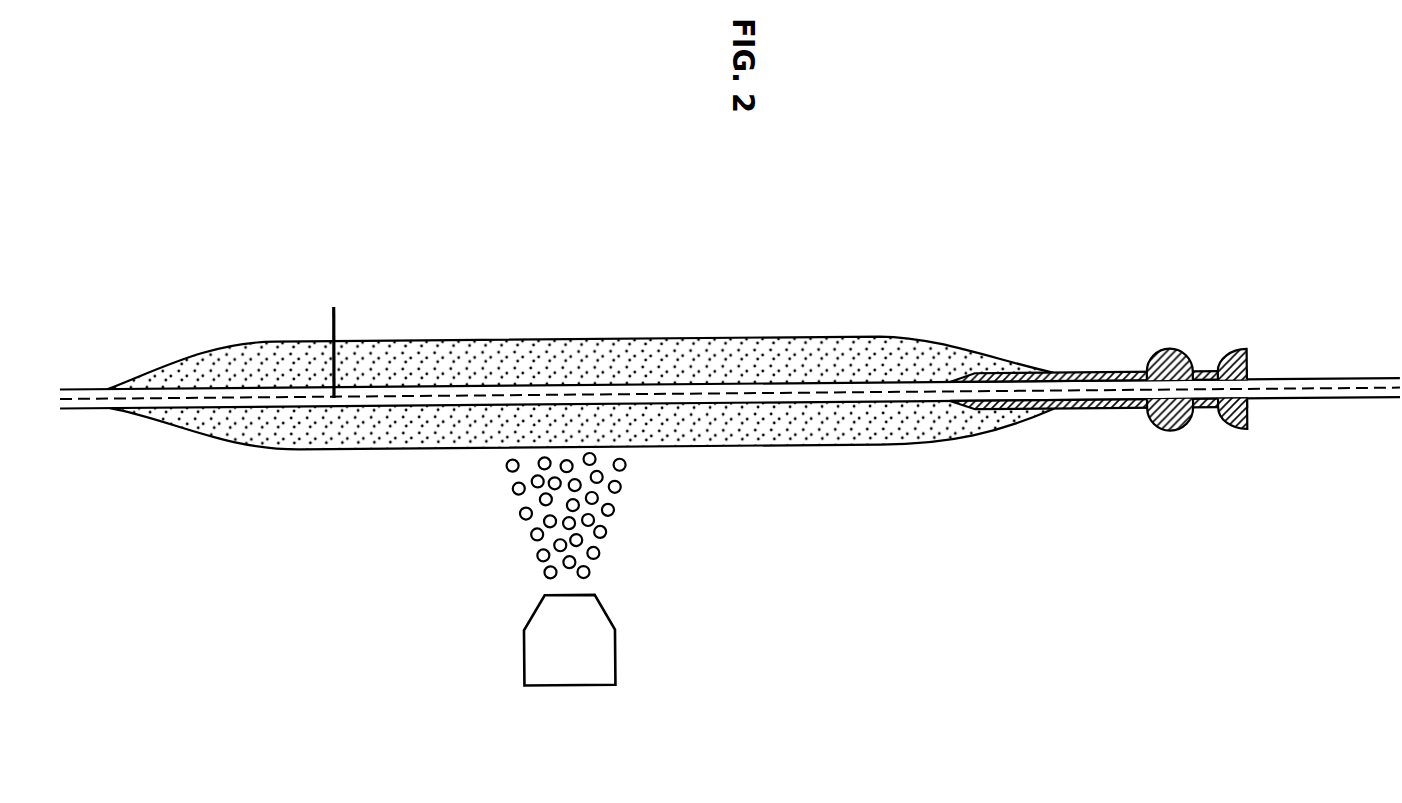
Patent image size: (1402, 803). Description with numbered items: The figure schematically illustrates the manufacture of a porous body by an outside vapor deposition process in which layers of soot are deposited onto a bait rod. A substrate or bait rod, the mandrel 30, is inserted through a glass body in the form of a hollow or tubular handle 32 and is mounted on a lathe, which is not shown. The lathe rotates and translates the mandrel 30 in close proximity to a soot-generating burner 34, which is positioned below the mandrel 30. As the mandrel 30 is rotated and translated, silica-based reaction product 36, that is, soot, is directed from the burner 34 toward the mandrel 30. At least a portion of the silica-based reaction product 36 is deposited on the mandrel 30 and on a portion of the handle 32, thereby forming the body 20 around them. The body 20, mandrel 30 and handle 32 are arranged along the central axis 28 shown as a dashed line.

The body 20 is at (615, 363).
The central axis 28 is at (336, 320).
The mandrel 30 is at (735, 401).
The handle 32 is at (1097, 381).
The soot-generating burner 34 is at (614, 662).
The silica-based reaction product 36 is at (614, 515).